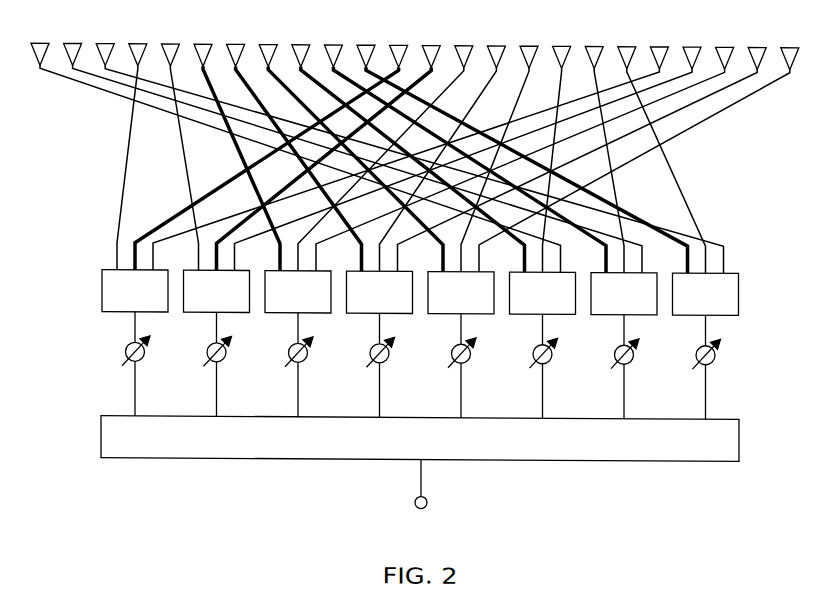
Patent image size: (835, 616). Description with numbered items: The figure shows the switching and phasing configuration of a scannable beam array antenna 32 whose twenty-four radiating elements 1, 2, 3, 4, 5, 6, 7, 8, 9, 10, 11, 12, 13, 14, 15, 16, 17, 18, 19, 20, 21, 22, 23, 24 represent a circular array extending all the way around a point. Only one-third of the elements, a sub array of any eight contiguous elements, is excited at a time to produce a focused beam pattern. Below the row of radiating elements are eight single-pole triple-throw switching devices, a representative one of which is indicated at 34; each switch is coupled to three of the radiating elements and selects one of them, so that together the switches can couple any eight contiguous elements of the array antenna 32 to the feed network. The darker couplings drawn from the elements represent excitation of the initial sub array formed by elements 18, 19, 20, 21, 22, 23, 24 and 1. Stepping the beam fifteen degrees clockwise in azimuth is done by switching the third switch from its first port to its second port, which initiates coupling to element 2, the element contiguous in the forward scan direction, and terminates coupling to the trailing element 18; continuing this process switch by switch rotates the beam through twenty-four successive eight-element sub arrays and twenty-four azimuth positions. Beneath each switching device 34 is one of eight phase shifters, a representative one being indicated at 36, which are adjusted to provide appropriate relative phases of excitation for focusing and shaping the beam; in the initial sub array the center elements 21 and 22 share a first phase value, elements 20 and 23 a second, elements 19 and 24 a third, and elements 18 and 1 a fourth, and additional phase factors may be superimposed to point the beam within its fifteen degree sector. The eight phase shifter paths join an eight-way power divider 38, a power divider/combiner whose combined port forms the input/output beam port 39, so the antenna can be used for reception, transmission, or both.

The array antenna 32 is at (83, 152).
The single-pole triple-throw (SP3T) switching device 34 is at (739, 289).
The phase shifter 36 is at (714, 356).
The 8-way power divider 38 is at (739, 438).
The input/output beam port 39 is at (427, 497).
The radiating element 1 is at (329, 146).
The radiating element 2 is at (385, 147).
The radiating element 3 is at (443, 147).
The radiating element 4 is at (499, 148).
The radiating element 5 is at (557, 148).
The radiating element 6 is at (604, 149).
The radiating element 7 is at (662, 149).
The radiating element 8 is at (410, 147).
The radiating element 9 is at (468, 147).
The radiating element 10 is at (525, 148).
The radiating element 11 is at (583, 148).
The radiating element 12 is at (639, 149).
The radiating element 13 is at (295, 146).
The radiating element 14 is at (352, 146).
The radiating element 15 is at (409, 148).
The radiating element 16 is at (132, 146).
The radiating element 17 is at (179, 146).
The radiating element 18 is at (236, 146).
The radiating element 19 is at (293, 146).
The radiating element 20 is at (350, 147).
The radiating element 21 is at (408, 147).
The radiating element 22 is at (464, 148).
The radiating element 23 is at (522, 148).
The radiating element 24 is at (272, 147).